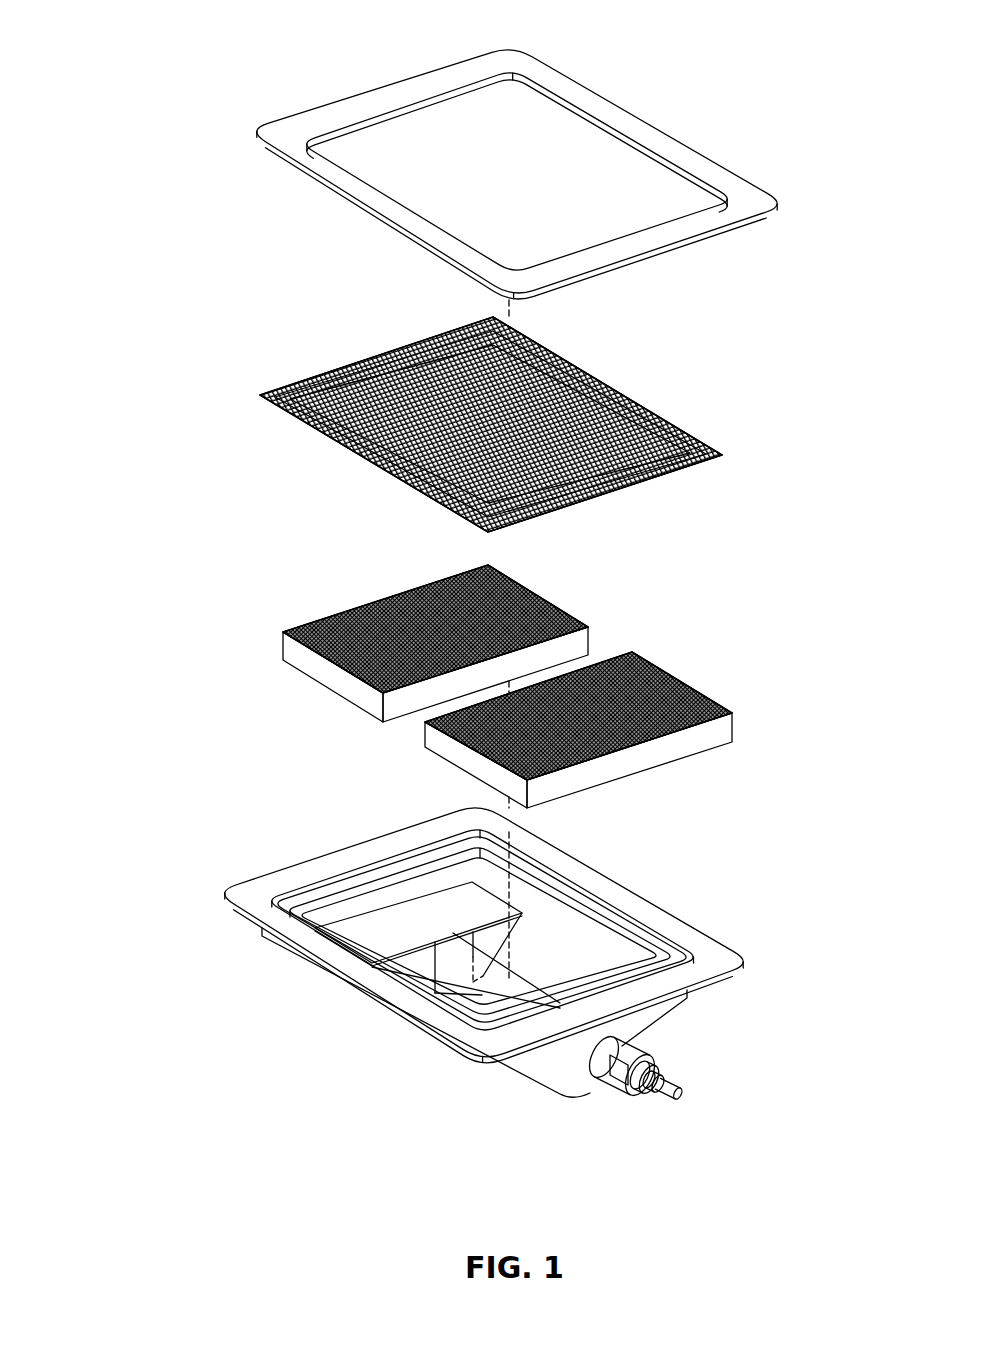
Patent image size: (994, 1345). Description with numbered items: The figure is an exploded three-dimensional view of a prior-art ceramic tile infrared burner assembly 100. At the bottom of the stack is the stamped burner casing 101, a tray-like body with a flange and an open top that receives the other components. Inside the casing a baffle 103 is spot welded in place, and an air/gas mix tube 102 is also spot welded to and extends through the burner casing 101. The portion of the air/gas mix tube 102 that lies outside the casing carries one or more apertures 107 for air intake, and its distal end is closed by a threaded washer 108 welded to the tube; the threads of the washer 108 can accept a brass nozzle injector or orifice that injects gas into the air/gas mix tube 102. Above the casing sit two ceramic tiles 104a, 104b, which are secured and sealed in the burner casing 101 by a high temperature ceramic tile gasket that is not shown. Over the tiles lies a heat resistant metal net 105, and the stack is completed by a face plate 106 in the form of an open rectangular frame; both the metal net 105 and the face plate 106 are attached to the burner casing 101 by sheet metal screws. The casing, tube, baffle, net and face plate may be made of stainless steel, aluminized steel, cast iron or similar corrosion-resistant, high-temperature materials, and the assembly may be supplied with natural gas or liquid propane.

The ceramic tile infrared burner assembly 100 is at (118, 48).
The burner casing 101 is at (689, 951).
The air/gas mix tube 102 is at (633, 1050).
The baffle 103 is at (410, 905).
The ceramic tile 104a is at (307, 622).
The ceramic tile 104b is at (707, 693).
The heat resistant metal net 105 is at (708, 389).
The face plate 106 is at (753, 114).
The aperture 107 is at (607, 1068).
The threaded washer 108 is at (654, 1098).